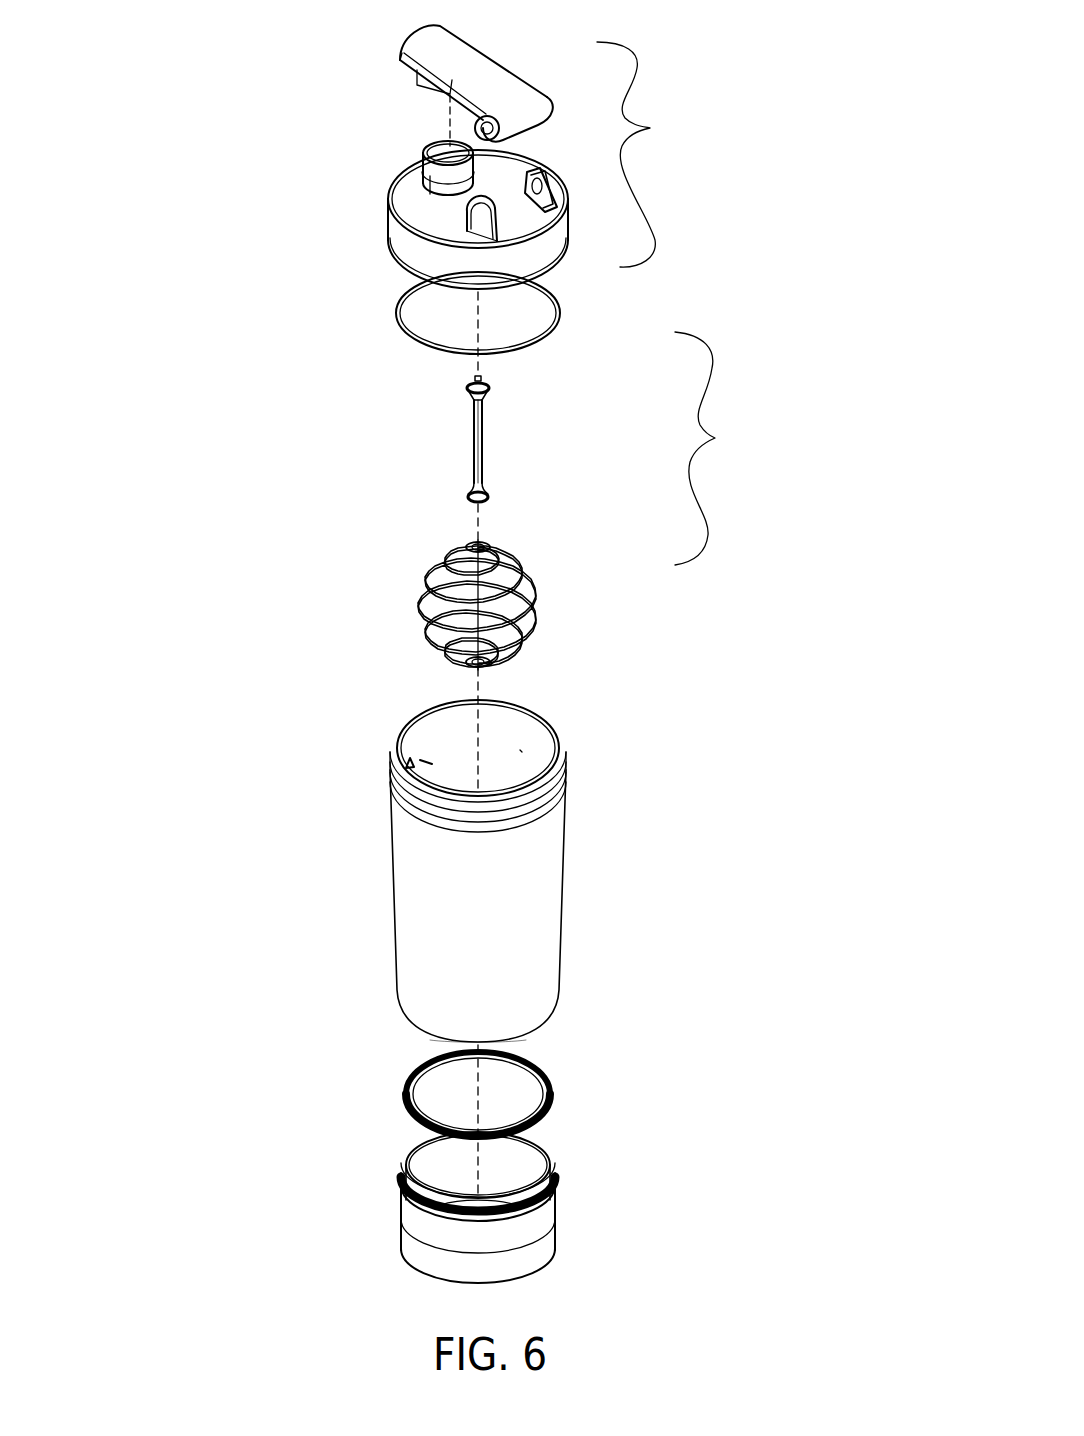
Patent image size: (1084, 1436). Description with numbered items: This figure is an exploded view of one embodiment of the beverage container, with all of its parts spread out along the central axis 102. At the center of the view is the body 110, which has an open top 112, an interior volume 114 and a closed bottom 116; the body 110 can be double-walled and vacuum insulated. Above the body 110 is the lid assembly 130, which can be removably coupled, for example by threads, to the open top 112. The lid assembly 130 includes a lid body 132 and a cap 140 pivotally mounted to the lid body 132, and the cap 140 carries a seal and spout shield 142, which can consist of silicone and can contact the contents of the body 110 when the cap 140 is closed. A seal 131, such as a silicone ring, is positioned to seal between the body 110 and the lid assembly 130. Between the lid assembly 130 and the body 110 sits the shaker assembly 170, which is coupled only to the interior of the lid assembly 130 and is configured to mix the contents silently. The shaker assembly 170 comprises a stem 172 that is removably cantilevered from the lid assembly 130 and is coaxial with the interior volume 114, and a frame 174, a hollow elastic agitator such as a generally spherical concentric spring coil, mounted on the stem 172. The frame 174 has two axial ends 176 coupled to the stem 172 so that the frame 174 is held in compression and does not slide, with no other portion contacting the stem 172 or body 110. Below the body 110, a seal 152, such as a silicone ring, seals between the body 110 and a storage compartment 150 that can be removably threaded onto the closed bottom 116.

The axis 102 is at (474, 493).
The body 110 is at (600, 848).
The open top 112 is at (548, 687).
The interior volume 114 is at (520, 750).
The closed bottom 116 is at (545, 1020).
The lid assembly 130 is at (652, 154).
The seal 131 is at (395, 320).
The lid body 132 is at (392, 250).
The cap 140 is at (416, 36).
The seal and spout shield 142 is at (418, 78).
The storage compartment 150 is at (556, 1228).
The seal 152 is at (553, 1092).
The shaker assembly 170 is at (719, 448).
The stem 172 is at (484, 440).
The frame 174 is at (525, 568).
The axial ends 176 is at (455, 545).